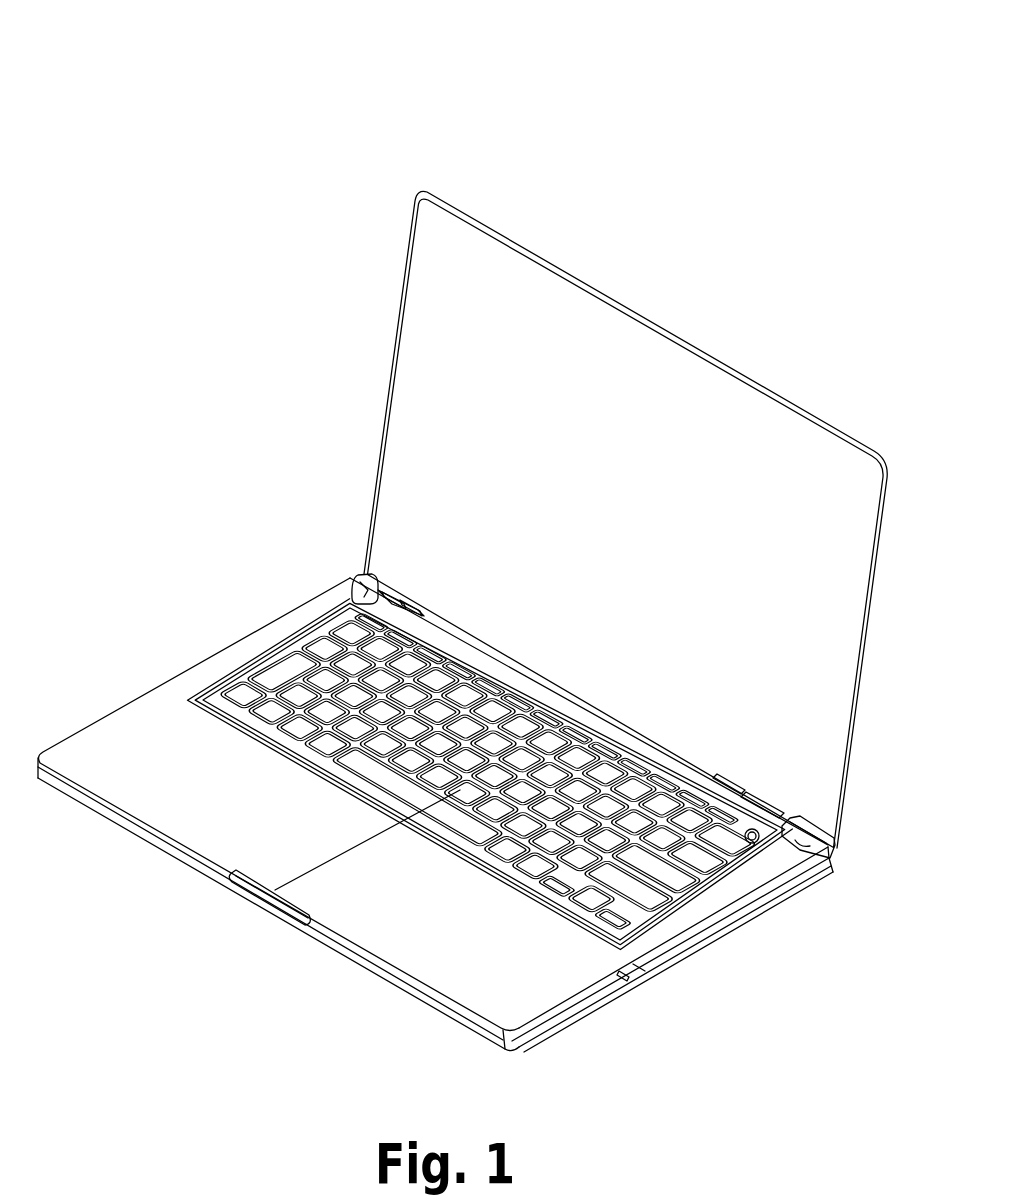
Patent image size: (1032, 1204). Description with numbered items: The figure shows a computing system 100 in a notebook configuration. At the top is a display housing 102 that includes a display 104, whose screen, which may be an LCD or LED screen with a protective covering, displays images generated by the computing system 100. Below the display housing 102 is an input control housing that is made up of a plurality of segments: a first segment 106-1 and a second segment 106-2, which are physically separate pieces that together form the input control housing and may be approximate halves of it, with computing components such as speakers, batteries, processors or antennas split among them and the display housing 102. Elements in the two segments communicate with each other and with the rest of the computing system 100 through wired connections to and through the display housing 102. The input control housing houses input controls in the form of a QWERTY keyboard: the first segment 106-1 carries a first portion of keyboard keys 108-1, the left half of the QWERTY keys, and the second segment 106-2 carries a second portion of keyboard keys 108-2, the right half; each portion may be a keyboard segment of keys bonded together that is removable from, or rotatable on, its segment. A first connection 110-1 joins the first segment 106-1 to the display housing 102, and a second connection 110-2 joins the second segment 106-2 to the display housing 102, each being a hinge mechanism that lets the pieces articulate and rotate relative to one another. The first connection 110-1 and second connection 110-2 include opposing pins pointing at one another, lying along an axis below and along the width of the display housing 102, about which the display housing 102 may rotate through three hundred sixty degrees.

The computing system 100 is at (473, 542).
The display housing 102 is at (550, 258).
The display 104 is at (621, 353).
The first segment 106-1 is at (133, 717).
The second segment 106-2 is at (552, 988).
The first portion of keyboard keys 108-1 is at (270, 686).
The second portion of keyboard keys 108-2 is at (650, 900).
The first connection 110-1 is at (353, 573).
The second connection 110-2 is at (833, 851).